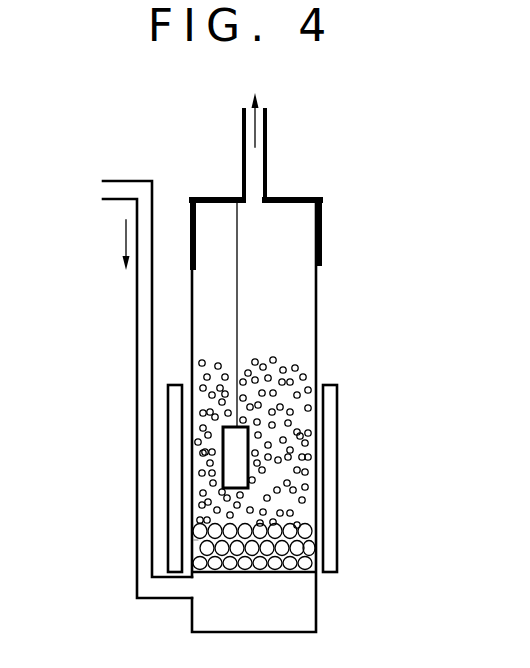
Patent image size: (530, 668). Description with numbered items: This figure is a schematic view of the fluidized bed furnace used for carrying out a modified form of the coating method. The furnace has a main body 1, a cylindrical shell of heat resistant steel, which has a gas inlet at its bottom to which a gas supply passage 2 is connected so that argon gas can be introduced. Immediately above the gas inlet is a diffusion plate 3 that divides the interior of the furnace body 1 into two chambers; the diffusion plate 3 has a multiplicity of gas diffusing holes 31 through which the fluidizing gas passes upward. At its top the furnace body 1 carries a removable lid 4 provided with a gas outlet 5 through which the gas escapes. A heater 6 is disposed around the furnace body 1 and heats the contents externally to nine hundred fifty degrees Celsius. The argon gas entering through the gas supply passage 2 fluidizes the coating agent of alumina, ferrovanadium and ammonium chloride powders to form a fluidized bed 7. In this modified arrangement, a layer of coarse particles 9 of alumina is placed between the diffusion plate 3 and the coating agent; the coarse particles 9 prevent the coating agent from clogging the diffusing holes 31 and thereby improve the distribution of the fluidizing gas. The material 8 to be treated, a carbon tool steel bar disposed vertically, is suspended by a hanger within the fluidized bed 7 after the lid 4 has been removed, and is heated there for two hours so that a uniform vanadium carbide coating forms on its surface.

The main body 1 is at (316, 350).
The gas supply passage 2 is at (147, 346).
The diffusion plate 3 is at (288, 573).
The gas diffusing holes 31 is at (230, 573).
The removable lid 4 is at (323, 222).
The gas outlet 5 is at (258, 157).
The heater 6 is at (176, 502).
The fluidized bed 7 is at (297, 423).
The material to be treated 8 is at (238, 475).
The coarse particles 9 is at (196, 545).